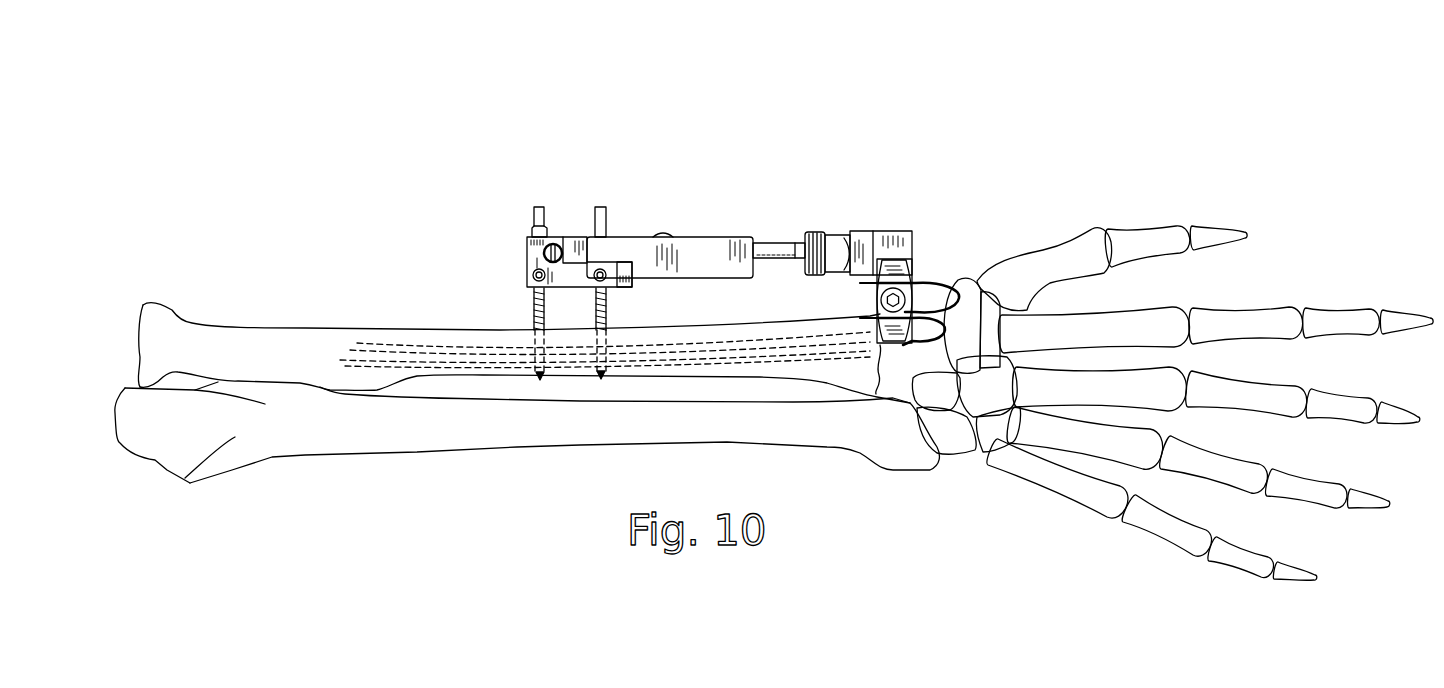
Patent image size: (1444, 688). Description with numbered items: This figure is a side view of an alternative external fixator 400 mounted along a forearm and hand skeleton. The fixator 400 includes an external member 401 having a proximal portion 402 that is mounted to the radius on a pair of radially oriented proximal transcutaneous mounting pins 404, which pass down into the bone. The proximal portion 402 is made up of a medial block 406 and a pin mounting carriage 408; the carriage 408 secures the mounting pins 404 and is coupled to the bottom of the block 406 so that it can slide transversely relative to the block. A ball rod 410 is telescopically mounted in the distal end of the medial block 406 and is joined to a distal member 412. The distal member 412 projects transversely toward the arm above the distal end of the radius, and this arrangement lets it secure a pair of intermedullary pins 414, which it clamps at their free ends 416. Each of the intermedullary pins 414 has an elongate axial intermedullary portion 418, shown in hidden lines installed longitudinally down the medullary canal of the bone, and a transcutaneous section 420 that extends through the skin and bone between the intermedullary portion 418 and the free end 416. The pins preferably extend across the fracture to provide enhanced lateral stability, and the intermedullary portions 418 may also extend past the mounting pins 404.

The external fixator 400 is at (784, 88).
The external member 401 is at (716, 165).
The proximal portion 402 is at (688, 230).
The proximal transcutaneous mounting pins 404 is at (597, 226).
The medial block 406 is at (627, 235).
The pin mounting carriage 408 is at (620, 288).
The ball rod 410 is at (758, 242).
The distal member 412 is at (864, 228).
The intermedullary pins 414 is at (956, 276).
The free ends 416 is at (848, 322).
The intermedullary portions 418 is at (388, 360).
The transcutaneous sections 420 is at (920, 290).